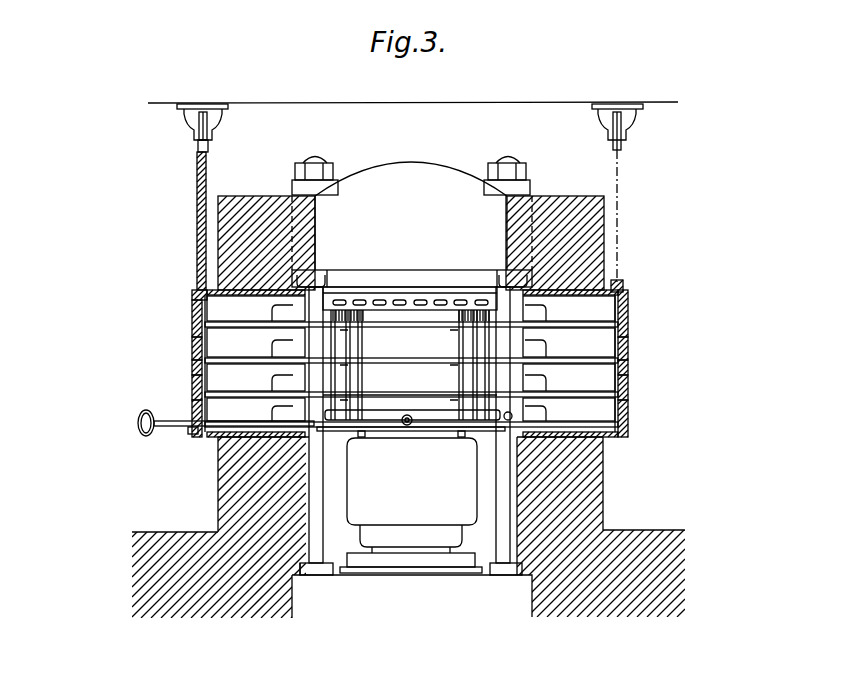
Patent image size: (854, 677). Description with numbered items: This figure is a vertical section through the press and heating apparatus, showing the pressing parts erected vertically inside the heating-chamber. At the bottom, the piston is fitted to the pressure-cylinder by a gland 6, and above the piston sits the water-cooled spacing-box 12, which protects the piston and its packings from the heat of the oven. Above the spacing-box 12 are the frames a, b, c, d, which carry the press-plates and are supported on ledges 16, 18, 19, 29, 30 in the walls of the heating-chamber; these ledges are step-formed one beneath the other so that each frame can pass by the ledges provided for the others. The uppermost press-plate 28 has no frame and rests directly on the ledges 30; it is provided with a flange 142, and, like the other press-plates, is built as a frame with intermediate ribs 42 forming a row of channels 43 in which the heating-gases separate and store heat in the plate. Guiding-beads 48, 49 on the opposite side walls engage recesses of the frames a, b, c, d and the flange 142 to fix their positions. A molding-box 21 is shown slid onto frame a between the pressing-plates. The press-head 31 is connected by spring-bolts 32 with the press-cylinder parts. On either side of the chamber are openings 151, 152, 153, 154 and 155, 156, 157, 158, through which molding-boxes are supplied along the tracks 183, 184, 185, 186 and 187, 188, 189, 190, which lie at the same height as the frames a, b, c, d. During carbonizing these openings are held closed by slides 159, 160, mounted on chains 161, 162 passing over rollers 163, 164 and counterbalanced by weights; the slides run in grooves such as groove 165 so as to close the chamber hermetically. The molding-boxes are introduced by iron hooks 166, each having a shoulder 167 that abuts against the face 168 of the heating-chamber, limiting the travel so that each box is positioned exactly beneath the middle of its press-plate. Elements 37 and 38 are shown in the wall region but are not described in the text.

The roller 163 is at (195, 128).
The chain 161 is at (200, 152).
The slide 159 is at (198, 238).
The roller 164 is at (630, 128).
The chain 162 is at (622, 162).
The slide 160 is at (621, 282).
The press-head 31 is at (411, 224).
The uppermost press-plate 28 is at (409, 298).
The flange 142 is at (361, 292).
The intermediate rib 42 is at (451, 298).
The channel 43 is at (484, 300).
The opening 154 is at (200, 300).
The groove 165 is at (197, 322).
The opening 153 is at (196, 348).
The wall section 37 is at (198, 364).
The opening 152 is at (196, 388).
The opening 151 is at (197, 413).
The iron hook 166 is at (145, 437).
The shoulder 167 is at (190, 436).
The face of the heating-chamber 168 is at (210, 440).
The track 186 is at (229, 323).
The track 185 is at (229, 359).
The track 184 is at (229, 393).
The track 183 is at (229, 424).
The track 190 is at (597, 322).
The track 189 is at (597, 358).
The track 188 is at (597, 392).
The track 187 is at (597, 424).
The ledge 30 is at (328, 298).
The ledge 29 is at (335, 333).
The ledge 19 is at (338, 368).
The ledge 18 is at (340, 402).
The opening 158 is at (626, 309).
The opening 157 is at (626, 343).
The wall section 38 is at (637, 366).
The opening 156 is at (627, 387).
The opening 155 is at (627, 418).
The frame d is at (388, 335).
The frame c is at (417, 344).
The guiding-bead 48 is at (470, 336).
The guiding-bead 49 is at (352, 375).
The frame b is at (426, 390).
The molding-box 21 is at (436, 417).
The frame a is at (407, 432).
The ledge 16 is at (362, 438).
The spacing-box 12 is at (412, 495).
The spring-bolt 32 is at (320, 535).
The gland 6 is at (372, 568).